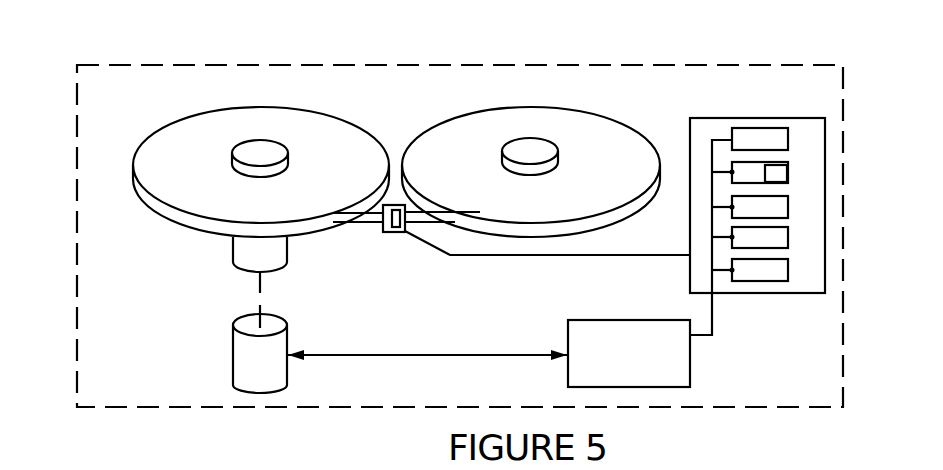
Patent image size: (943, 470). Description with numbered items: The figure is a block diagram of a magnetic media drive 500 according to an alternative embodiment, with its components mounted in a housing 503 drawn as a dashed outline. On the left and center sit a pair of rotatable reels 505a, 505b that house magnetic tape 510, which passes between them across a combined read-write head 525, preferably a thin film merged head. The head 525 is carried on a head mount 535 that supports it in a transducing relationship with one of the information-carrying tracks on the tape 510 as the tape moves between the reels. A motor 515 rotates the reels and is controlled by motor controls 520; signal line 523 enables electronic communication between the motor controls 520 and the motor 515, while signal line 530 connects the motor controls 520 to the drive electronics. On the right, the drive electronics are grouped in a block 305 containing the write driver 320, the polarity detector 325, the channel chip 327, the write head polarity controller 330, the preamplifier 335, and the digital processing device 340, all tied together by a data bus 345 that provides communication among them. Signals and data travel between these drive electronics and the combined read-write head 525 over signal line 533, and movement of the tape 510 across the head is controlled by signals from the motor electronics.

The magnetic media drive 500 is at (449, 50).
The housing 503 is at (77, 276).
The rotatable reel 505a is at (213, 118).
The second reel 505b is at (538, 118).
The magnetic tape 510 is at (391, 205).
The motor 515 is at (257, 393).
The motor controls 520 is at (633, 387).
The signal line 523 is at (349, 357).
The combined read-write head 525 is at (398, 205).
The signal line 530 is at (712, 320).
The signal line 533 is at (671, 253).
The head mount 535 is at (232, 242).
The controller 305 is at (781, 118).
The write driver 320 is at (788, 139).
The polarity detector 325 is at (788, 168).
The channel chip 327 is at (788, 177).
The write head polarity controller 330 is at (788, 207).
The preamplifier 335 is at (788, 237).
The digital processing device 340 is at (788, 270).
The data bus 345 is at (705, 140).